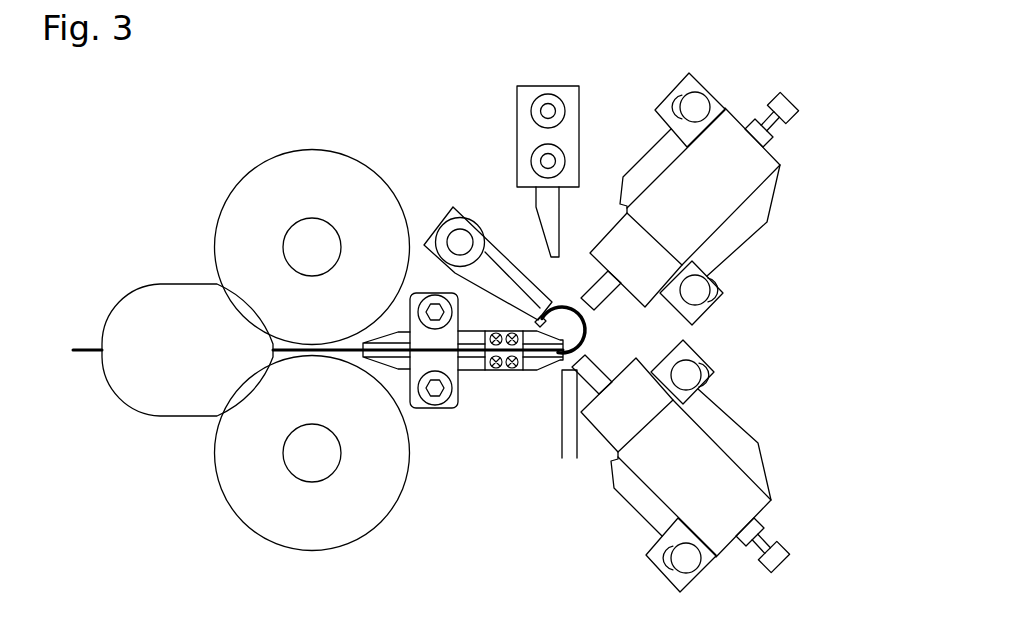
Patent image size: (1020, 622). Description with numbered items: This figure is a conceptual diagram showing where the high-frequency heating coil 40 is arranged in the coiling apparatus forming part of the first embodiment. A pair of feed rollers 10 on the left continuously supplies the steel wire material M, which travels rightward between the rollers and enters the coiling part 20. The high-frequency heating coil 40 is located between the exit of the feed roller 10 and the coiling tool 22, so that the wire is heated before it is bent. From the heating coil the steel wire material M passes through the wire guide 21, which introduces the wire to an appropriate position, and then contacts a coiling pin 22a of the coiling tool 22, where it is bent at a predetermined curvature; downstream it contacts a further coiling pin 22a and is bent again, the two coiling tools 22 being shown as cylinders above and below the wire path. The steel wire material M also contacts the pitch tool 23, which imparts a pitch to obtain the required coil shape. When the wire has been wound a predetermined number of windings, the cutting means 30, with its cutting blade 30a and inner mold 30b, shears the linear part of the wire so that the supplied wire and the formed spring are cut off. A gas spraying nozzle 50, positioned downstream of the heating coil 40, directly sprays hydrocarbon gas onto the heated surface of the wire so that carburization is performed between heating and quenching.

The feed roller 10 is at (312, 551).
The coiling part 20 is at (571, 550).
The wire guide 21 is at (545, 373).
The coiling tool 22 is at (780, 163).
The coiling pin 22a is at (577, 306).
The pitch tool 23 is at (457, 208).
The cutting means 30 is at (517, 120).
The cutting blade 30a is at (536, 208).
The inner mold 30b is at (562, 300).
The high frequency heating coil 40 is at (498, 373).
The nozzle 50 is at (568, 428).
The steel wire material M is at (588, 325).